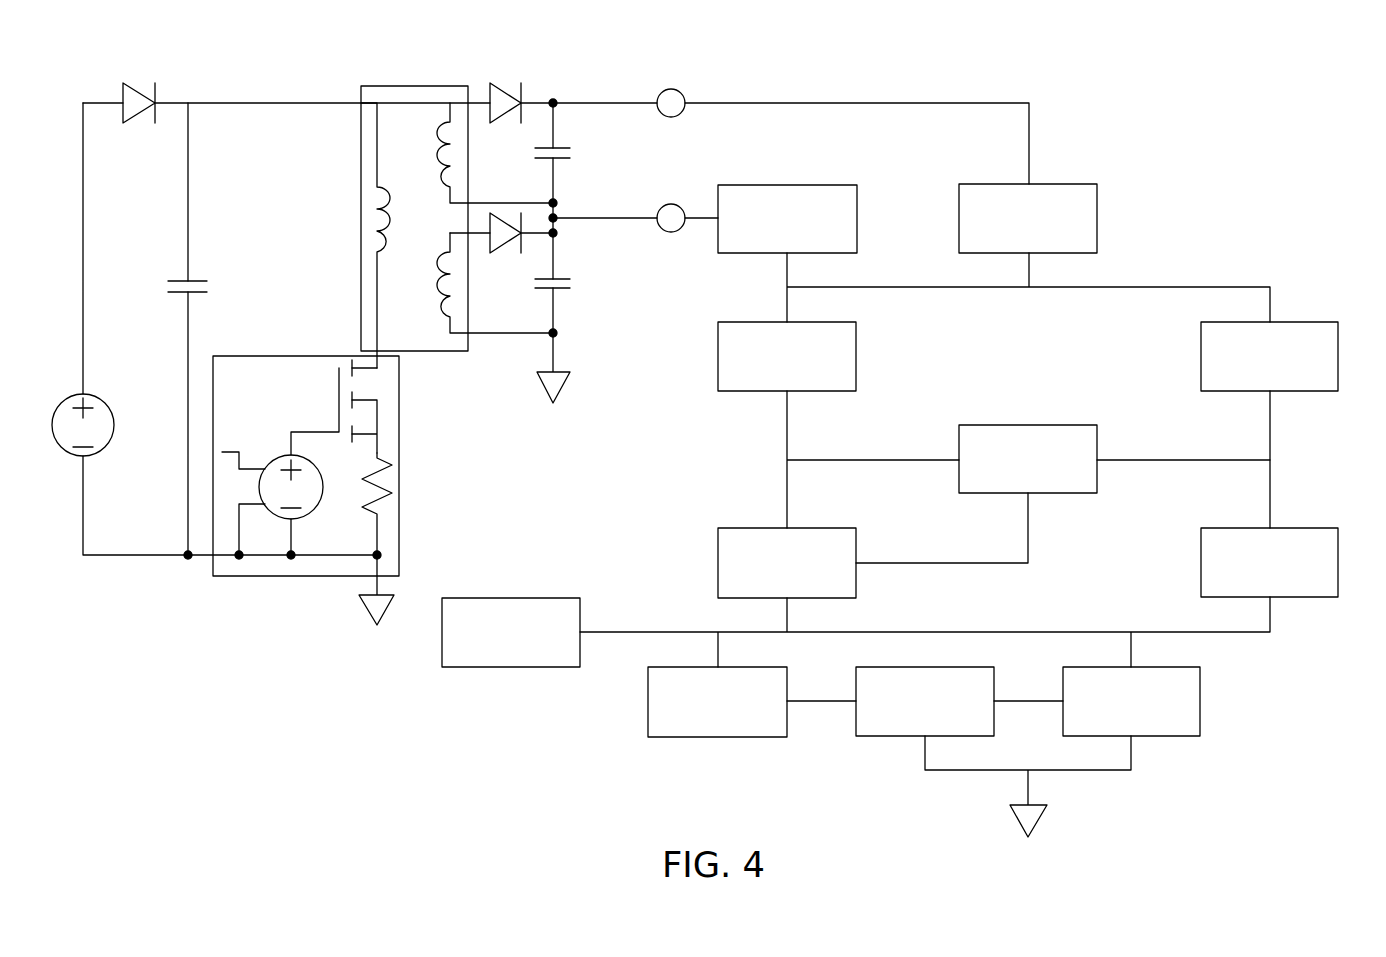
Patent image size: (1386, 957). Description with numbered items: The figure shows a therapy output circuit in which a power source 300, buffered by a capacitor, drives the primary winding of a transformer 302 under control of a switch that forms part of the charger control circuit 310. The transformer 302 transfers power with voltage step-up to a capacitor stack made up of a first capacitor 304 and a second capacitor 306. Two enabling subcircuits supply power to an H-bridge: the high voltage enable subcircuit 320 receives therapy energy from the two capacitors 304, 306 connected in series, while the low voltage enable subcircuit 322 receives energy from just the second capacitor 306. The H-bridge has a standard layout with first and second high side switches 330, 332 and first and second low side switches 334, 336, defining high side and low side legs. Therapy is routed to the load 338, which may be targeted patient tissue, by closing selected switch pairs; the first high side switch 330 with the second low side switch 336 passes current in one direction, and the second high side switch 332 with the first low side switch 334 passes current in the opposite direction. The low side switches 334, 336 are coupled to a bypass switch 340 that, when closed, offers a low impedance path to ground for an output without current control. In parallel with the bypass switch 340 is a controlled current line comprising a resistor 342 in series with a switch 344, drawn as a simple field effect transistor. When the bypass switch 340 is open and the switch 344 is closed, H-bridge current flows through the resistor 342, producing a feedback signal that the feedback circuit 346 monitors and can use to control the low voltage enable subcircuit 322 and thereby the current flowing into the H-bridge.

The power source 300 is at (95, 395).
The transformer 302 is at (405, 86).
The first capacitor 304 is at (566, 150).
The second capacitor 306 is at (566, 281).
The charger control circuit 310 is at (306, 577).
The high voltage enable subcircuit 320 is at (1097, 219).
The low voltage enable subcircuit 322 is at (857, 219).
The first high side switch 330 is at (856, 356).
The second high side switch 332 is at (1310, 322).
The first low side switch 334 is at (856, 543).
The second low side switch 336 is at (1310, 528).
The load 338 is at (1068, 425).
The bypass switch 340 is at (1200, 701).
The resistor 342 is at (718, 737).
The switch 344 is at (888, 736).
The feedback circuit 346 is at (510, 667).